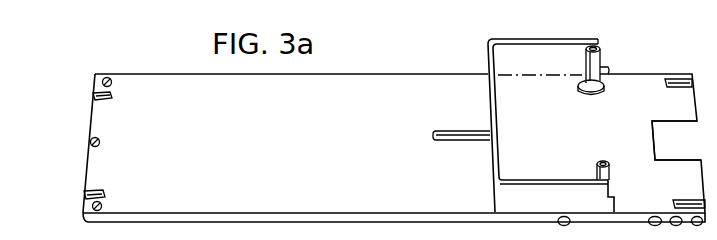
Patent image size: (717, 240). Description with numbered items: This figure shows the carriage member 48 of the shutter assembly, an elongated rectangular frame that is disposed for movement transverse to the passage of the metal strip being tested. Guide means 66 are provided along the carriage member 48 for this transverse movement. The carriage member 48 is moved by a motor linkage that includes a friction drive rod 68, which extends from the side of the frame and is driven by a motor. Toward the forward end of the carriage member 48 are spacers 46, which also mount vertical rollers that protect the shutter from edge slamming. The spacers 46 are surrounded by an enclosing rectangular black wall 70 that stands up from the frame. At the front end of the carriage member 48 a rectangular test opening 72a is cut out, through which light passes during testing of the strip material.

The carriage member 48 is at (360, 82).
The guide means 66 is at (88, 141).
The enclosing rectangular black wall 70 is at (488, 42).
The spacers 46 is at (602, 58).
The friction drive rod 68 is at (448, 130).
The test opening 72a is at (703, 158).